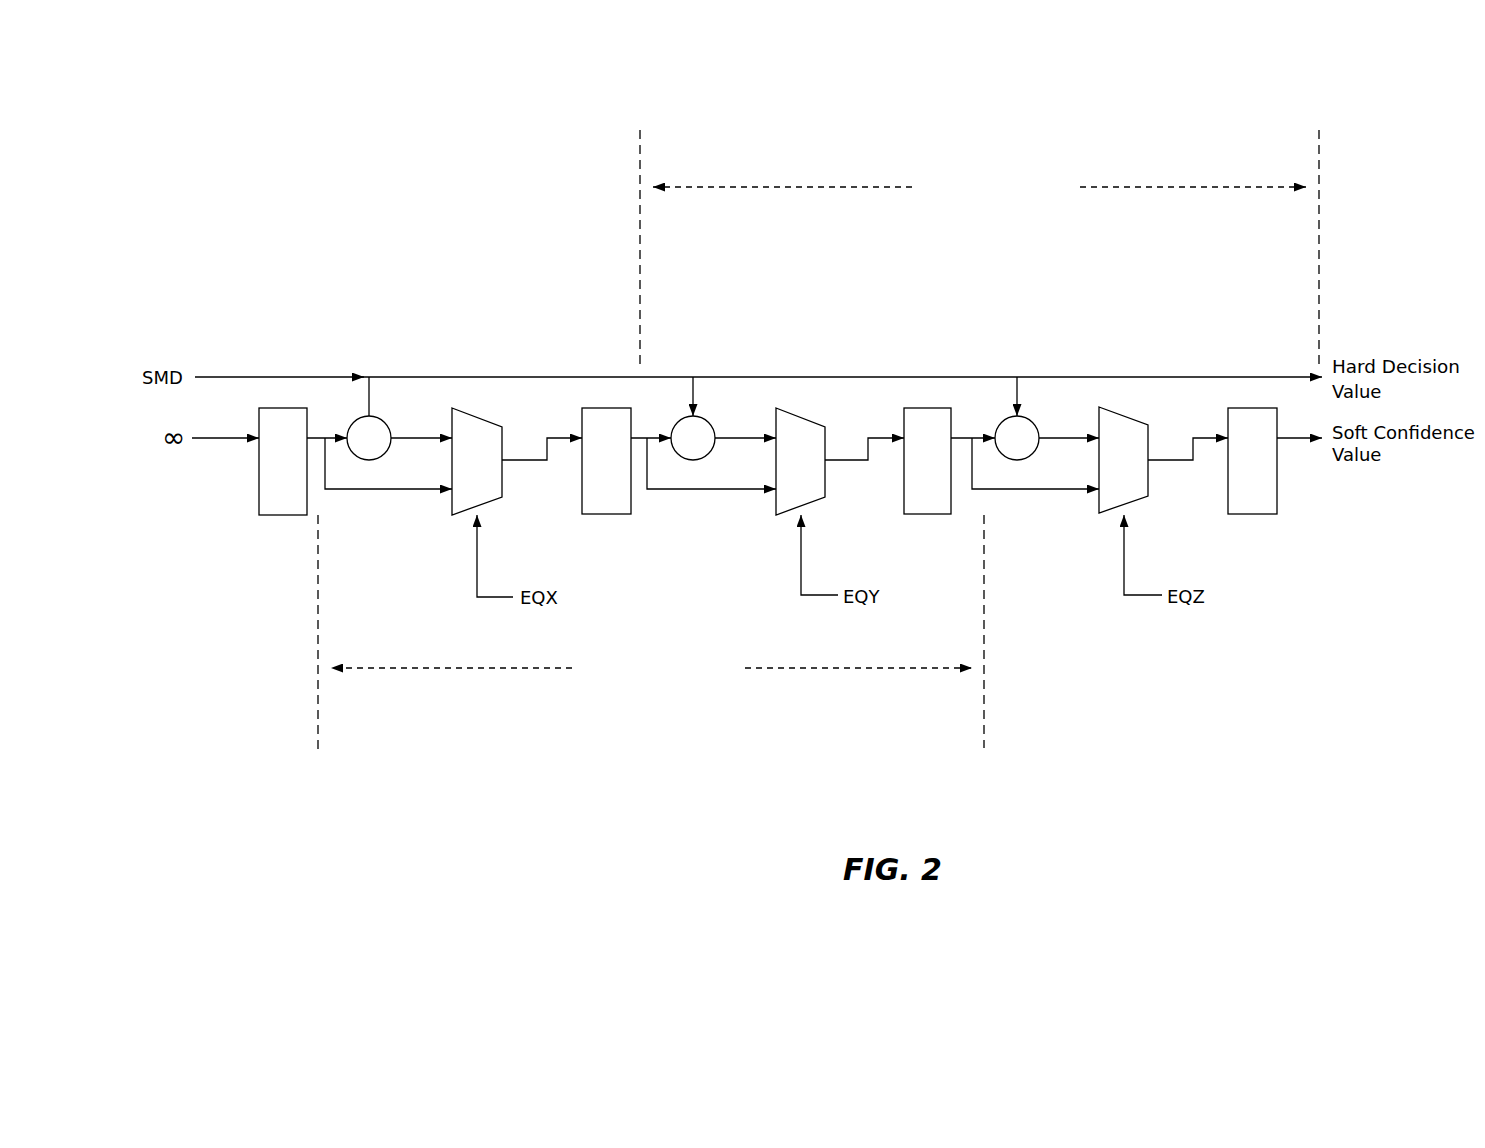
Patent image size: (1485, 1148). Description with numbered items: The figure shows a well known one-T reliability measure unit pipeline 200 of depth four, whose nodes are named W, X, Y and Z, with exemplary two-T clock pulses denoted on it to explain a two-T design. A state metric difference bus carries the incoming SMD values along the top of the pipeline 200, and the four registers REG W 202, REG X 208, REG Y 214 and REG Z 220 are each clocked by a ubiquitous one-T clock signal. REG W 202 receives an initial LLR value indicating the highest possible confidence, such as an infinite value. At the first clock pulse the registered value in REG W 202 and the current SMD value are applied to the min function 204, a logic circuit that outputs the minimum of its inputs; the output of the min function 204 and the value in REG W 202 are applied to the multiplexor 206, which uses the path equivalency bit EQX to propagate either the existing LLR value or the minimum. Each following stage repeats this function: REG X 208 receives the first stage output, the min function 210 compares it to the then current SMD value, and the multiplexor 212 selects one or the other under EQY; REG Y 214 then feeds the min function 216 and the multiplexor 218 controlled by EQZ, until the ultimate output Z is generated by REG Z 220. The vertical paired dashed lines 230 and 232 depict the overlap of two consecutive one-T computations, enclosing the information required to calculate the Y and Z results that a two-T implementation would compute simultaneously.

The 1T RMU pipeline 200 is at (323, 147).
The REG W 202 is at (259, 497).
The min function 204 is at (385, 422).
The multiplexor 206 is at (502, 491).
The REG X 208 is at (618, 514).
The min function 210 is at (709, 422).
The multiplexor 212 is at (825, 490).
The REG Y 214 is at (928, 514).
The min function 216 is at (1033, 421).
The multiplexor 218 is at (1148, 489).
The REG Z 220 is at (1262, 514).
The vertical paired dashed lines 230 is at (671, 686).
The vertical paired dashed lines 232 is at (1024, 208).